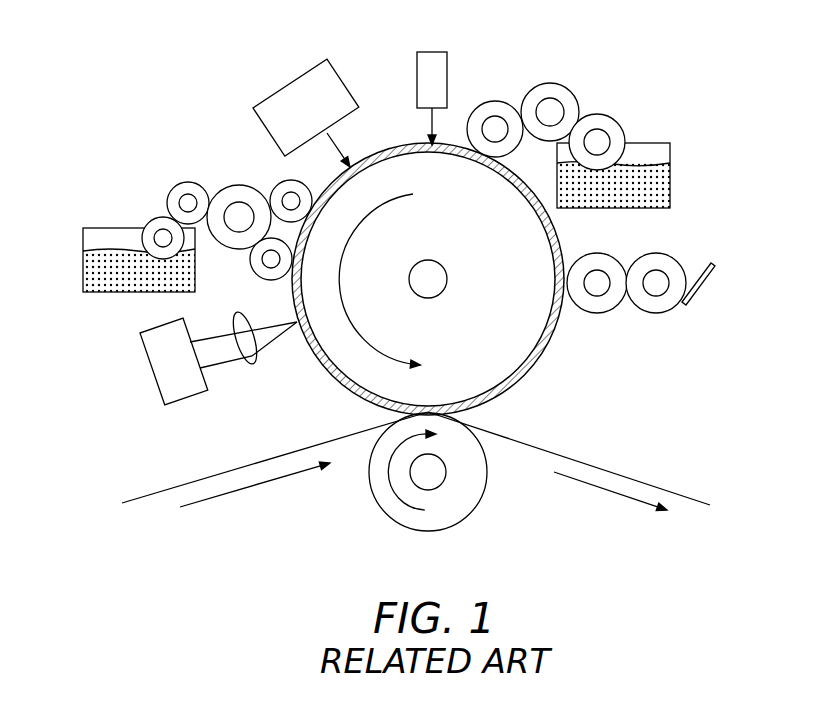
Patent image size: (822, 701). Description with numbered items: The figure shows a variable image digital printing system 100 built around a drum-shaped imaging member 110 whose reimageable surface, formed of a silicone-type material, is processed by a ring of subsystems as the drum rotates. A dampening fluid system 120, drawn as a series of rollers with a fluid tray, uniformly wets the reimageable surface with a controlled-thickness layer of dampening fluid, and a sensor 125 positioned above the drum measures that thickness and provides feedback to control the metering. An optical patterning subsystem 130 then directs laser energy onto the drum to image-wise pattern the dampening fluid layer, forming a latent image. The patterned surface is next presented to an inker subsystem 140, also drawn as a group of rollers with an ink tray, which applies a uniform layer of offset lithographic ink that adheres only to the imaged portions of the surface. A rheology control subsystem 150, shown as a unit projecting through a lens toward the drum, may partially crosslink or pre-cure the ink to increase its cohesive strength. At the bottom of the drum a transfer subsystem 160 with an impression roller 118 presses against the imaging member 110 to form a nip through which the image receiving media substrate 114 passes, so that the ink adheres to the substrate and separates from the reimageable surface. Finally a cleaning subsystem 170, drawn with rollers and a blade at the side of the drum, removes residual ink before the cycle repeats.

The printing system 100 is at (207, 83).
The imaging member 110 is at (542, 353).
The image receiving media substrate 114 is at (160, 490).
The impression roller 118 is at (372, 533).
The dampening fluid system 120 is at (582, 47).
The sensor 125 is at (433, 52).
The optical patterning subsystem 130 is at (342, 80).
The inker subsystem 140 is at (70, 183).
The rheology control subsystem 150 is at (198, 362).
The transfer subsystem 160 is at (457, 494).
The cleaning subsystem 170 is at (721, 235).